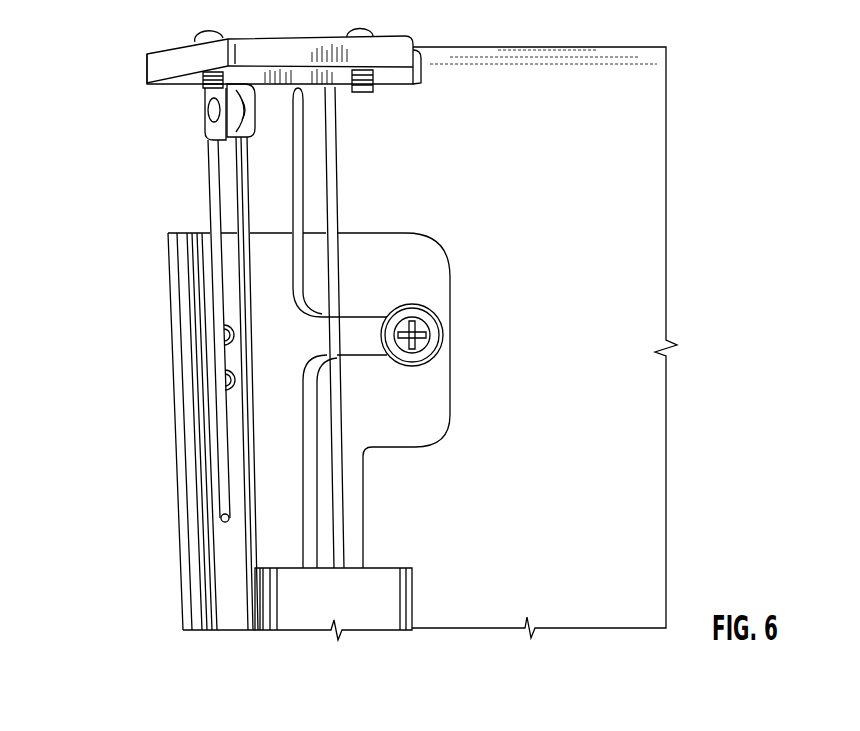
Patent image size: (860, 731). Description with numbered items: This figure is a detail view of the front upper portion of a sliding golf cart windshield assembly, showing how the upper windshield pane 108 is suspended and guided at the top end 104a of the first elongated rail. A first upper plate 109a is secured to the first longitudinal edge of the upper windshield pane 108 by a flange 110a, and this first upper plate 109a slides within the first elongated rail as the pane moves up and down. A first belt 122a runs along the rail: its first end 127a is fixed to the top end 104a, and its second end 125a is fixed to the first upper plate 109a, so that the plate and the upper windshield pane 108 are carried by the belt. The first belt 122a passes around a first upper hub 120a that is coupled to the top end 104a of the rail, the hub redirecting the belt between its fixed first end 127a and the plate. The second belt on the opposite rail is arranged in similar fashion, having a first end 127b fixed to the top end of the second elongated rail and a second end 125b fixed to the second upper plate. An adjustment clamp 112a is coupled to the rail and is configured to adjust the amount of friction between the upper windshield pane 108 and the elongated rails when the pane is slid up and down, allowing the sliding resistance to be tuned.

The top end of first elongated rail 104a is at (168, 52).
The upper windshield pane 108 is at (645, 133).
The first upper plate 109a is at (177, 463).
The flange 110a is at (428, 270).
The adjustment clamp 112a is at (393, 580).
The first upper hub 120a is at (223, 131).
The first belt 122a is at (243, 207).
The second end of first belt 125a is at (225, 517).
The second end of second belt 125b is at (334, 327).
The first end of first belt 127a is at (333, 80).
The first end of second belt 127b is at (213, 80).